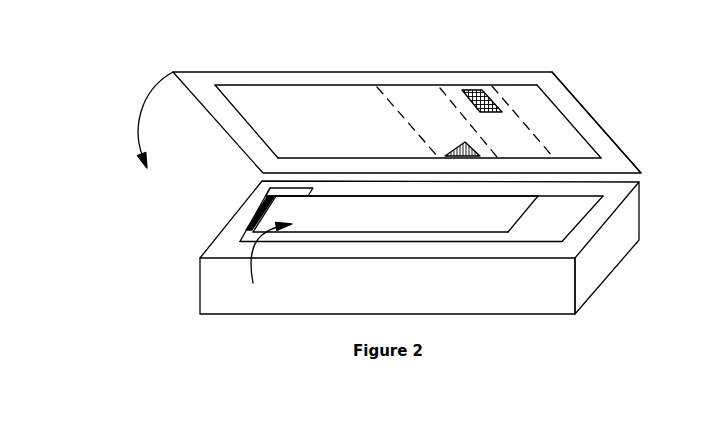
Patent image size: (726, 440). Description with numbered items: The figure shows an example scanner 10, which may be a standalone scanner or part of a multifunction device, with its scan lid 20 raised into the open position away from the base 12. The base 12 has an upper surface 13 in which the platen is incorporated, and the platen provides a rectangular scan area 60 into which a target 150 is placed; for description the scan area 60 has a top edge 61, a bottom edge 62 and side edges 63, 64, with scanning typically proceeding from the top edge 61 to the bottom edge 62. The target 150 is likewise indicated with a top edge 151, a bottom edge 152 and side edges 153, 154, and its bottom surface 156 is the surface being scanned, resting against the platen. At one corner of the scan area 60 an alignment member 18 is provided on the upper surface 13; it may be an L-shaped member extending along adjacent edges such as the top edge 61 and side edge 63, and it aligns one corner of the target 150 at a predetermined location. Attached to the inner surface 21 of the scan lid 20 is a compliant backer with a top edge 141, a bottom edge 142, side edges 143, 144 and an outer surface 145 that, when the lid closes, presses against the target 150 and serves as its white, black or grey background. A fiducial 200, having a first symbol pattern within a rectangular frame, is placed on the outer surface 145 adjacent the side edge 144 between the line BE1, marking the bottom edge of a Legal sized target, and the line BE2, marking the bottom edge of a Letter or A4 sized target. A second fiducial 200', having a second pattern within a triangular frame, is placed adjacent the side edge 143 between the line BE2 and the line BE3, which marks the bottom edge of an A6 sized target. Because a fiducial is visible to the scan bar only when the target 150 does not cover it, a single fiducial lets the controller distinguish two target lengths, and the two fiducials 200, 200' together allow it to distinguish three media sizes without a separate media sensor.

The scanner 10 is at (128, 72).
The base 12 is at (640, 229).
The upper surface 13 is at (634, 178).
The alignment member 18 is at (258, 205).
The scan lid 20 is at (213, 72).
The inner surface 21 is at (584, 111).
The scan area 60 is at (560, 225).
The top edge 61 is at (241, 240).
The bottom edge 62 is at (576, 228).
The side edge 63 is at (333, 196).
The side edge 64 is at (530, 243).
The top edge 141 is at (262, 142).
The bottom edge 142 is at (590, 138).
The side edge 143 is at (297, 158).
The side edge 144 is at (263, 85).
The outer surface 145 is at (311, 116).
The target 150 is at (261, 261).
The top edge 151 is at (268, 224).
The bottom edge 152 is at (519, 220).
The side edge 153 is at (398, 243).
The side edge 154 is at (397, 197).
The bottom surface 156 is at (393, 232).
The fiducial 200 is at (494, 76).
The second fiducial 200' is at (422, 100).
The line indicating bottom edge of Legal sized target BE1 is at (525, 122).
The line indicating bottom edge of Letter/A4 sized target BE2 is at (440, 90).
The line indicating bottom edge of A6 sized target BE3 is at (428, 140).